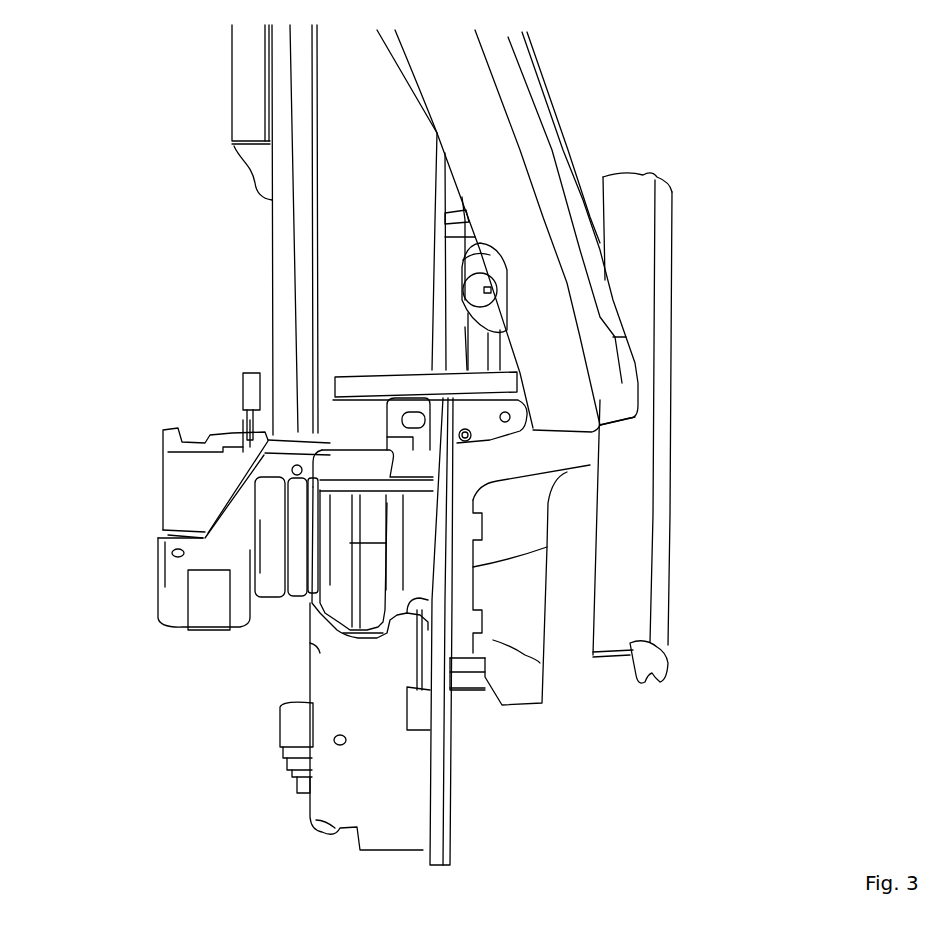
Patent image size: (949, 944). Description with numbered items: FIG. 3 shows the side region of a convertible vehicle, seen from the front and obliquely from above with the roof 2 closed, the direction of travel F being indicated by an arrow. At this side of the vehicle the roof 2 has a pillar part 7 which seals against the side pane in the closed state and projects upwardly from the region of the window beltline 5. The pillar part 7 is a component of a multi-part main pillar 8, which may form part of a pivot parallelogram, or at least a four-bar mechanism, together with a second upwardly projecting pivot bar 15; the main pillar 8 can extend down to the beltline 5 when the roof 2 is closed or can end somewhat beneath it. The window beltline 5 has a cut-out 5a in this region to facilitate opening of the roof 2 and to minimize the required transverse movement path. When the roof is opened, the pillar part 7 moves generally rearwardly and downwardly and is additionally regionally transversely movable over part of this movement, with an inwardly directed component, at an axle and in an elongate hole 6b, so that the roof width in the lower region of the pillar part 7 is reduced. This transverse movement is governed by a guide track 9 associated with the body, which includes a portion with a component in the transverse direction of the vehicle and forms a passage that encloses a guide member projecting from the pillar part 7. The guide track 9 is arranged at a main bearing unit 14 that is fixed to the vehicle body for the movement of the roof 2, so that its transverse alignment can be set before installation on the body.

The roof 2 is at (450, 62).
The window beltline 5 is at (640, 462).
The cut-out 5a is at (640, 383).
The elongate hole 6b is at (473, 290).
The pillar part 7 is at (535, 253).
The main pillar 8 is at (452, 203).
The guide track 9 is at (527, 712).
The main bearing unit 14 is at (288, 672).
The pivot bar 15 is at (285, 280).
The direction of travel F is at (588, 710).